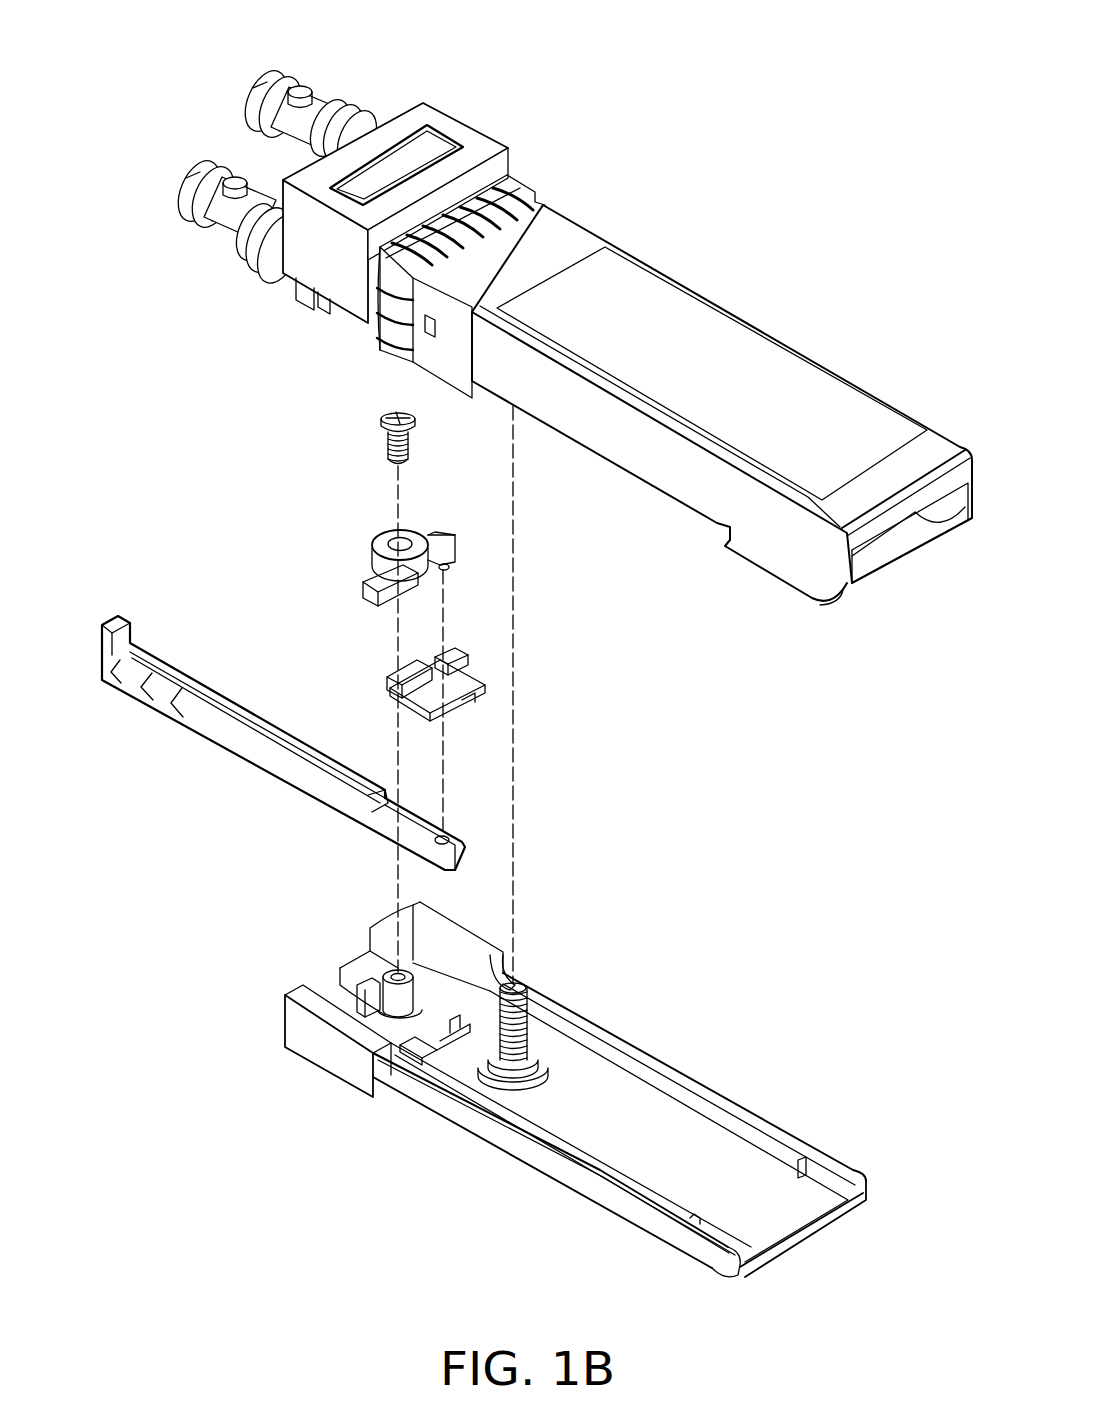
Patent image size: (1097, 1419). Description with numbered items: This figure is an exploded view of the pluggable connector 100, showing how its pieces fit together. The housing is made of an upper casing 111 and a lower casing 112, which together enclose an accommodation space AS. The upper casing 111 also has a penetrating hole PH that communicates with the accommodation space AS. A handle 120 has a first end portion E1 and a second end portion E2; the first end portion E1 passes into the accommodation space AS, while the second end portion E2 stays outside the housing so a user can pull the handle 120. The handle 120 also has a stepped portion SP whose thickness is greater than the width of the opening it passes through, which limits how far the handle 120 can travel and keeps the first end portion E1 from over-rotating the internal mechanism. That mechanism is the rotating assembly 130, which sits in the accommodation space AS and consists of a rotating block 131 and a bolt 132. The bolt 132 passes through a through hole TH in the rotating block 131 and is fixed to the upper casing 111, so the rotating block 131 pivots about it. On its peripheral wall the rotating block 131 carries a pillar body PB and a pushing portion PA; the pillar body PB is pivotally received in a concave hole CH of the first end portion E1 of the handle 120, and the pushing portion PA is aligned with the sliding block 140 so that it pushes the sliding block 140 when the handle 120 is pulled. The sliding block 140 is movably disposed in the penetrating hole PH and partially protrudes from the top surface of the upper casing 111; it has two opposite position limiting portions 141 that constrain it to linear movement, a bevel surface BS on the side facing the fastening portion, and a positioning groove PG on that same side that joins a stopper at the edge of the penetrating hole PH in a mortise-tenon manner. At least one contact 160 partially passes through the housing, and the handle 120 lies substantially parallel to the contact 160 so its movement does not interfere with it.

The pluggable connector 100 is at (514, 669).
The upper casing 111 is at (564, 1089).
The lower casing 112 is at (719, 330).
The handle 120 is at (311, 753).
The rotating assembly 130 is at (352, 538).
The rotating block 131 is at (382, 569).
The bolt 132 is at (387, 445).
The sliding block 140 is at (443, 697).
The position limiting portions 141 is at (410, 685).
The contact 160 is at (323, 106).
The accommodation space AS is at (647, 487).
The through hole TH is at (406, 543).
The pushing portion PA is at (367, 603).
The pillar body PB is at (448, 568).
The positioning groove PG is at (470, 701).
The bevel surface BS is at (437, 716).
The first end portion E1 is at (451, 833).
The second end portion E2 is at (118, 704).
The stepped portion SP is at (373, 820).
The concave hole CH is at (463, 857).
The penetrating hole PH is at (438, 1055).